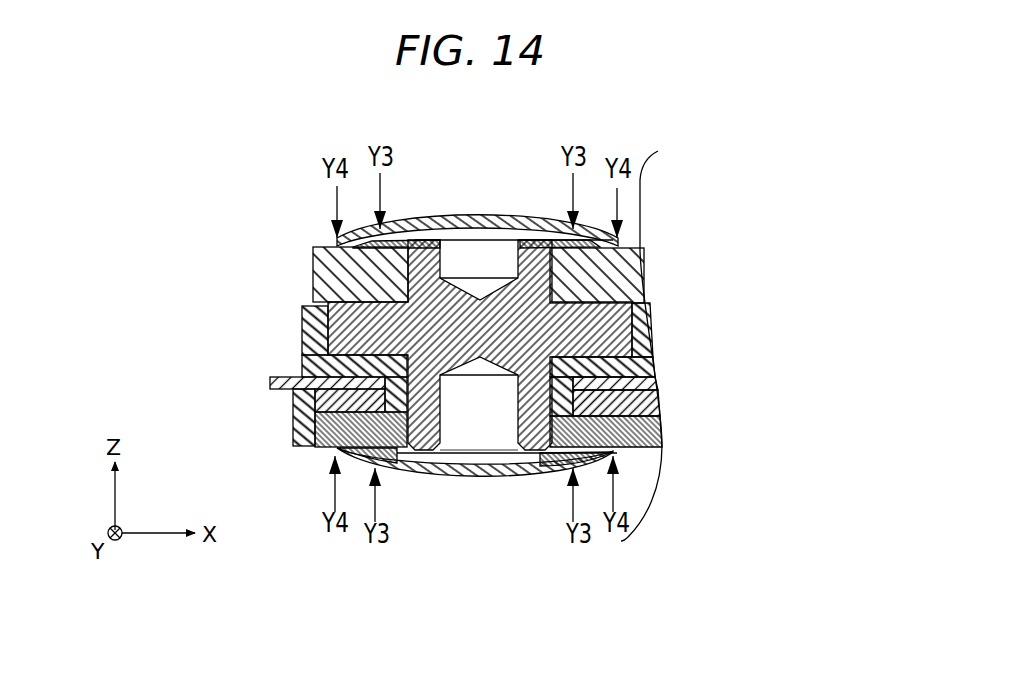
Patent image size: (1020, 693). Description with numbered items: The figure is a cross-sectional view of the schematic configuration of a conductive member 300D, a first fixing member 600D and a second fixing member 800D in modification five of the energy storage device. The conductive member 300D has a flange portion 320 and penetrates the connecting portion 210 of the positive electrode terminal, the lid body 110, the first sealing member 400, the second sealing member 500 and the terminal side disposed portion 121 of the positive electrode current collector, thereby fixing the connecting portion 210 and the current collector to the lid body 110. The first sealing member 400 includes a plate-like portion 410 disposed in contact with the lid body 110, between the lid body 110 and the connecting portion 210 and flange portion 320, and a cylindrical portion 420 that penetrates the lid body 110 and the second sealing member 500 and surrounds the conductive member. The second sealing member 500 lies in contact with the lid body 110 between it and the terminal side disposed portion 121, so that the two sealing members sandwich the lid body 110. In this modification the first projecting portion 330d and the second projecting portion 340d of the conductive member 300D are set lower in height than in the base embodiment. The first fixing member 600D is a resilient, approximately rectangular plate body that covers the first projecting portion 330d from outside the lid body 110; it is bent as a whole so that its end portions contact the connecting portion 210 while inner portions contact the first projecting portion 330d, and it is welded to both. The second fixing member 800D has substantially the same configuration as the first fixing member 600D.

The flange portion 320 is at (365, 337).
The connecting portion 210 is at (622, 277).
The plate-like portion 410 is at (360, 372).
The cylindrical portion 420 is at (390, 403).
The first sealing member 400 is at (647, 352).
The lid body 110 is at (635, 387).
The second sealing member 500 is at (647, 412).
The first fixing member 600D is at (584, 192).
The first projecting portion 330d is at (402, 246).
The second projecting portion 340d is at (395, 463).
The second fixing member 800D is at (436, 484).
The conductive member 300D is at (477, 443).
The terminal side disposed portion 121 is at (623, 444).